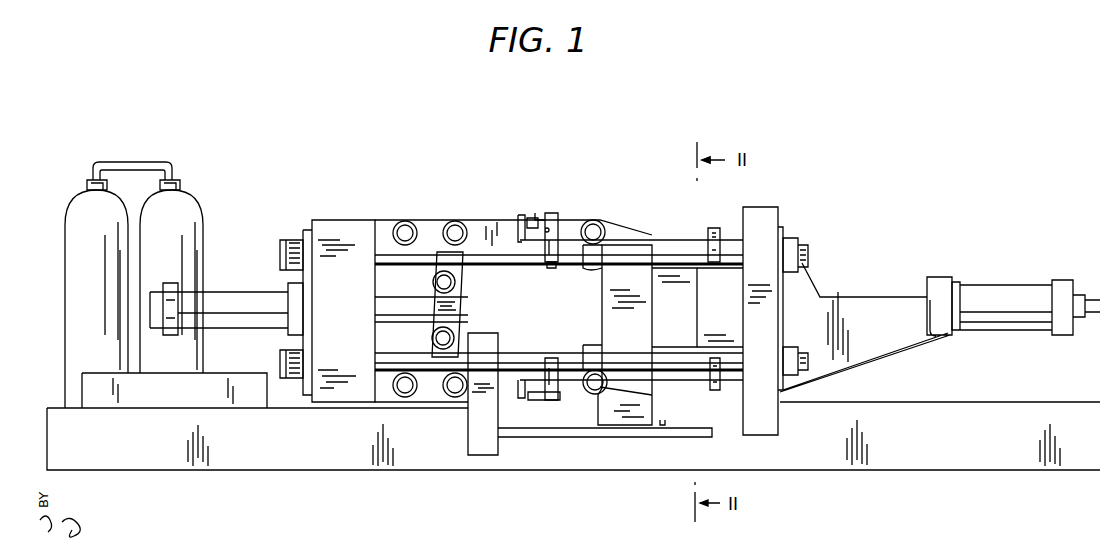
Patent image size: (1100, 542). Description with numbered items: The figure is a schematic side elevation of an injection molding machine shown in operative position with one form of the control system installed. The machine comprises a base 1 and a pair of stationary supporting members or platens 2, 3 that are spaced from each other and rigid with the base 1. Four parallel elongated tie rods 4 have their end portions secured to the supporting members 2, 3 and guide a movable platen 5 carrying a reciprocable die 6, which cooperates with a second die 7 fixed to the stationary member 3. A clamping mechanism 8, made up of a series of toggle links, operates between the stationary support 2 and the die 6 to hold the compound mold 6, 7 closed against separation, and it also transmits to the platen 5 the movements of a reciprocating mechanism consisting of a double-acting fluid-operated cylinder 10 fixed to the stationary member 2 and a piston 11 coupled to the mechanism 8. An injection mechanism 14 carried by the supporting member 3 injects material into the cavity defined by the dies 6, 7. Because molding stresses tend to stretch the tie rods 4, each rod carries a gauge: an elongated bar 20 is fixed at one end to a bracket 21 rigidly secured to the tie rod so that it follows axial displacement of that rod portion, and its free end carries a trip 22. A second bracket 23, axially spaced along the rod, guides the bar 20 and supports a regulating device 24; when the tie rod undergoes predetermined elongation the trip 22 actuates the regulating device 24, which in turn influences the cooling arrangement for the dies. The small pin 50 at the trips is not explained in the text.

The base 1 is at (954, 480).
The stationary supporting member 2 is at (330, 388).
The stationary supporting member 3 is at (770, 212).
The tie rods 4 is at (498, 265).
The movable platen 5 is at (615, 345).
The reciprocable die 6 is at (669, 323).
The second die 7 is at (715, 323).
The clamping mechanism 8 is at (428, 329).
The double-acting fluid-operated cylinder 10 is at (232, 297).
The piston 11 is at (406, 300).
The injection mechanism 14 is at (848, 285).
The elongated bar 20 is at (668, 238).
The bracket 21 is at (706, 255).
The trip 22 is at (518, 220).
The second bracket 23 is at (550, 265).
The regulating device 24 is at (556, 218).
The pin 50 is at (530, 216).